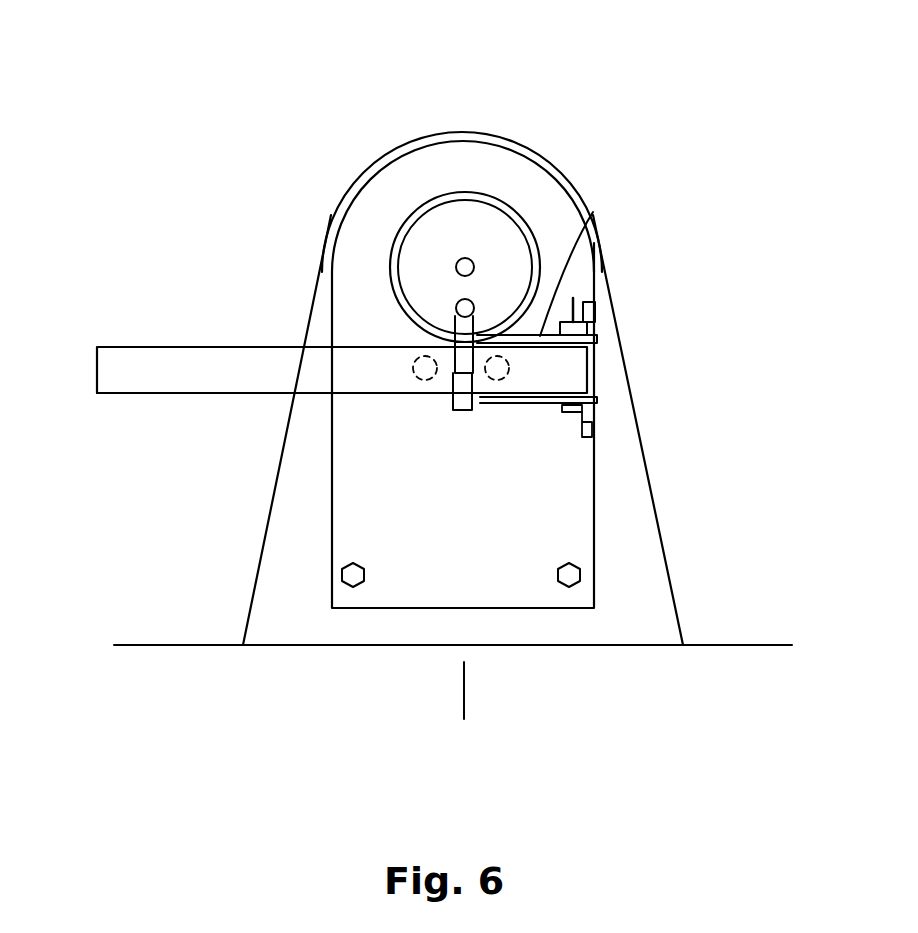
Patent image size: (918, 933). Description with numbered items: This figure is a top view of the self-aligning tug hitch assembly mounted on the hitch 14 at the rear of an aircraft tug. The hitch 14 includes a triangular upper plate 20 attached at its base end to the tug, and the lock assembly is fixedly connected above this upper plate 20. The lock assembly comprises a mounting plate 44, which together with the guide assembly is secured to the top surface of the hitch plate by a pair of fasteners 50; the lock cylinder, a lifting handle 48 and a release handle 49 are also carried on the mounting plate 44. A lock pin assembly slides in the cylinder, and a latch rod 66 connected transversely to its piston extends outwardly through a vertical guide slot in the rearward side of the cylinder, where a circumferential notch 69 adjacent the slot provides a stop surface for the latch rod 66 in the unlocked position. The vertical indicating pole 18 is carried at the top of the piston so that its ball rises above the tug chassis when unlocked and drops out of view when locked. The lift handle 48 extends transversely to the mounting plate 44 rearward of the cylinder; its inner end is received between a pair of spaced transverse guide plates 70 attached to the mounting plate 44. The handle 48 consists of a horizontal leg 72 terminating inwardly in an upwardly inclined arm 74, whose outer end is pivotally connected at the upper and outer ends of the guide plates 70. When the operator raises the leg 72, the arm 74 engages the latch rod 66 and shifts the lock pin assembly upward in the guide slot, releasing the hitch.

The hitch 14 is at (410, 135).
The mounting plate 44 is at (470, 133).
The indicating pole 18 is at (458, 260).
The circumferential notch 69 is at (490, 300).
The guide plates 70 is at (541, 330).
The upwardly inclined arm 74 is at (592, 348).
The lifting handle 48 is at (150, 346).
The release handle 49 is at (455, 341).
The fasteners 50 is at (353, 562).
The latch rod 66 is at (463, 407).
The horizontal leg 72 is at (155, 380).
The upper plate 20 is at (257, 565).